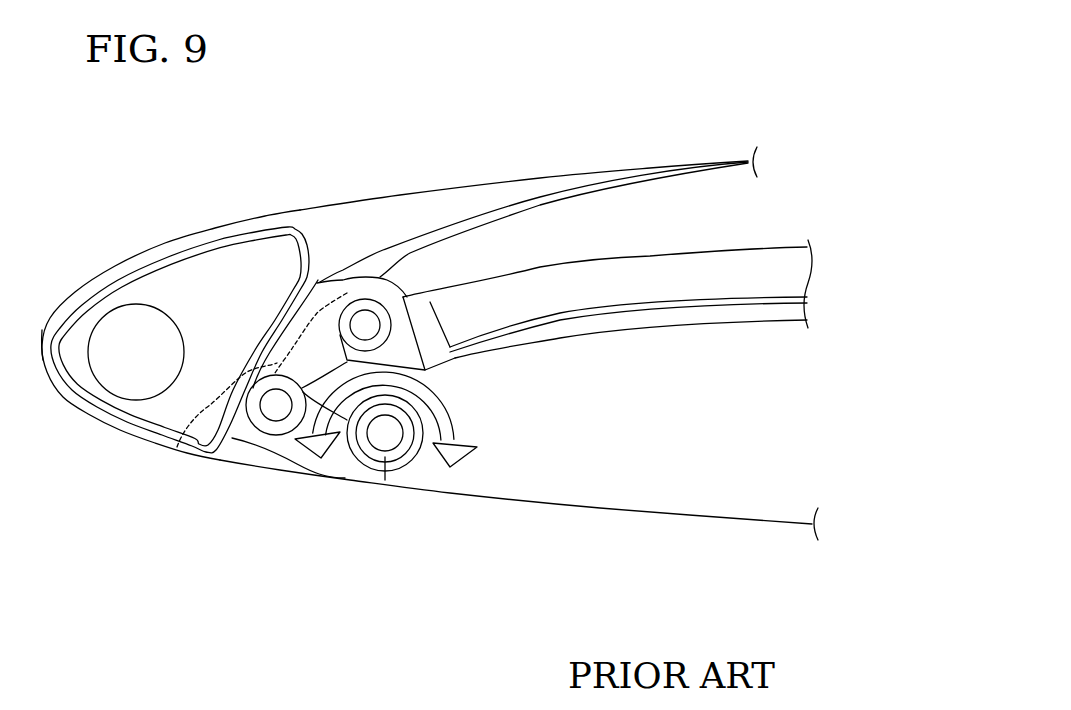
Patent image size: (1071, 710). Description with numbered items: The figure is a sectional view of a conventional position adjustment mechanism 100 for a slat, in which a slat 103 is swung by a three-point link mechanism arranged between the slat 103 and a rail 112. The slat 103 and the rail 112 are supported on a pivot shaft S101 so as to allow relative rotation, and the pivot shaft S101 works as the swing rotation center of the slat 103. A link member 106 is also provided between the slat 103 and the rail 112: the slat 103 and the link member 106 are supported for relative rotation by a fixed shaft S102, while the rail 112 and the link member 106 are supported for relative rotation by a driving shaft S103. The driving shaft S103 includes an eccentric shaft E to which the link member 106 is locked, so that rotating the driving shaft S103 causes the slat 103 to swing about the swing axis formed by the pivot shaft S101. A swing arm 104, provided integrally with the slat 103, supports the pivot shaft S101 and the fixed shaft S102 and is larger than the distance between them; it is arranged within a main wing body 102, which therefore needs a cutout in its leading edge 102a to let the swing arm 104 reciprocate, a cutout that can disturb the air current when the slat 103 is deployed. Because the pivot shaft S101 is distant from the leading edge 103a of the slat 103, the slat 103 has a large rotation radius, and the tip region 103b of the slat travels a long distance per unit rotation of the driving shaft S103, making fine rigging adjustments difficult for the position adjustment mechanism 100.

The position adjustment mechanism 100 is at (470, 433).
The main wing body 102 is at (712, 517).
The leading edge 102a is at (177, 447).
The slat 103 is at (255, 220).
The leading edge 103a is at (34, 350).
The lever blade tip 103b is at (737, 163).
The swing arm 104 is at (343, 270).
The link member 106 is at (347, 463).
The rail 112 is at (625, 335).
The pivot shaft S101 is at (372, 305).
The fixed shaft S102 is at (277, 455).
The driving shaft S103 is at (403, 467).
The eccentric shaft E is at (397, 450).